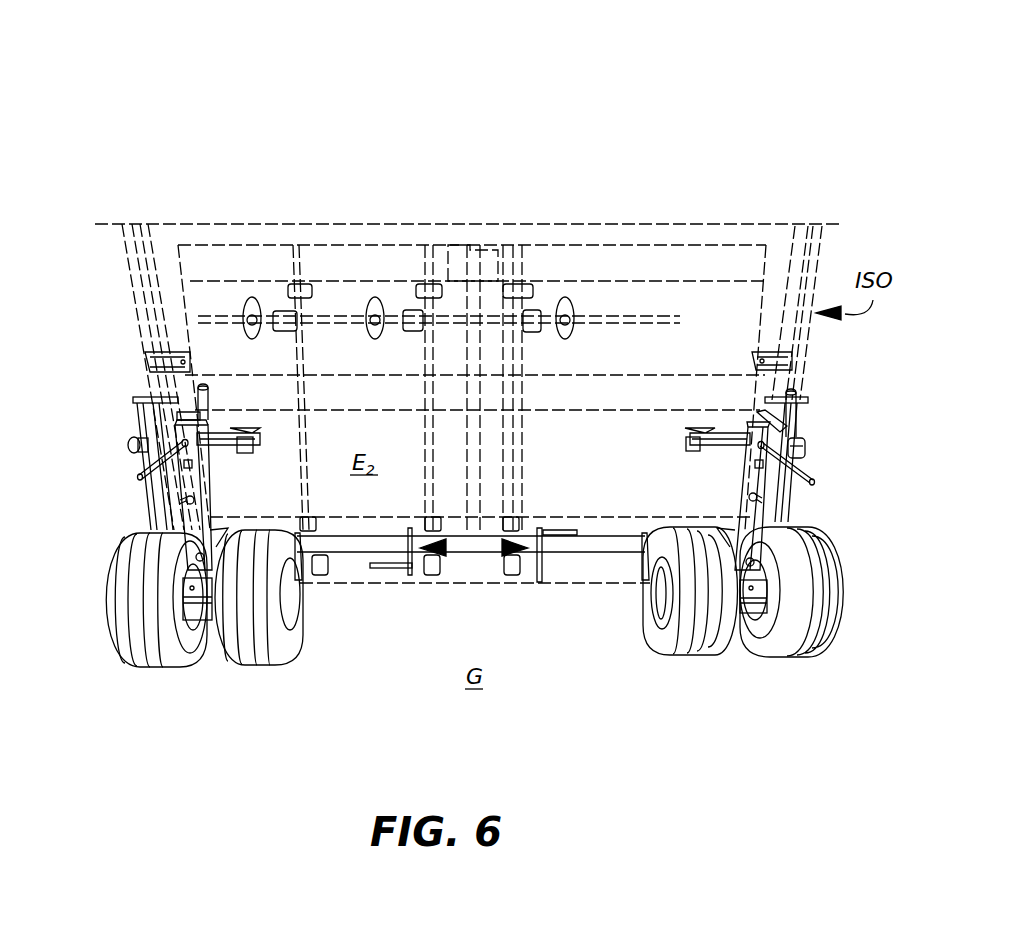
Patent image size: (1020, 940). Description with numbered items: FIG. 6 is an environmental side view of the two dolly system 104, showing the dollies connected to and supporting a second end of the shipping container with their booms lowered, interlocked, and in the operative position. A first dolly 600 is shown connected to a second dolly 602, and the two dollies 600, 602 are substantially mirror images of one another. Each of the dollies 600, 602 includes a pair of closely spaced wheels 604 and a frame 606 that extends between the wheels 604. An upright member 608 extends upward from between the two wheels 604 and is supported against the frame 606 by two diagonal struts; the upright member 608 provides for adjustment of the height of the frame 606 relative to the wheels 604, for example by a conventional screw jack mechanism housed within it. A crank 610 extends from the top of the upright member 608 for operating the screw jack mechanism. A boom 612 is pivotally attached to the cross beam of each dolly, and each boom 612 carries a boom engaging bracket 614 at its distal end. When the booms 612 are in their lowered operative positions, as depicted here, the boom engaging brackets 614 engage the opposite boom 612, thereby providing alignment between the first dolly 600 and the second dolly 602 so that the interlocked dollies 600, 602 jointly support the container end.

The two dolly system 104 is at (468, 303).
The first dolly 600 is at (185, 601).
The second dolly 602 is at (769, 590).
The wheels 604 is at (474, 620).
The frame 606 is at (472, 520).
The upright member 608 is at (467, 478).
The crank 610 is at (463, 403).
The boom 612 is at (472, 598).
The boom engaging bracket 614 is at (474, 588).